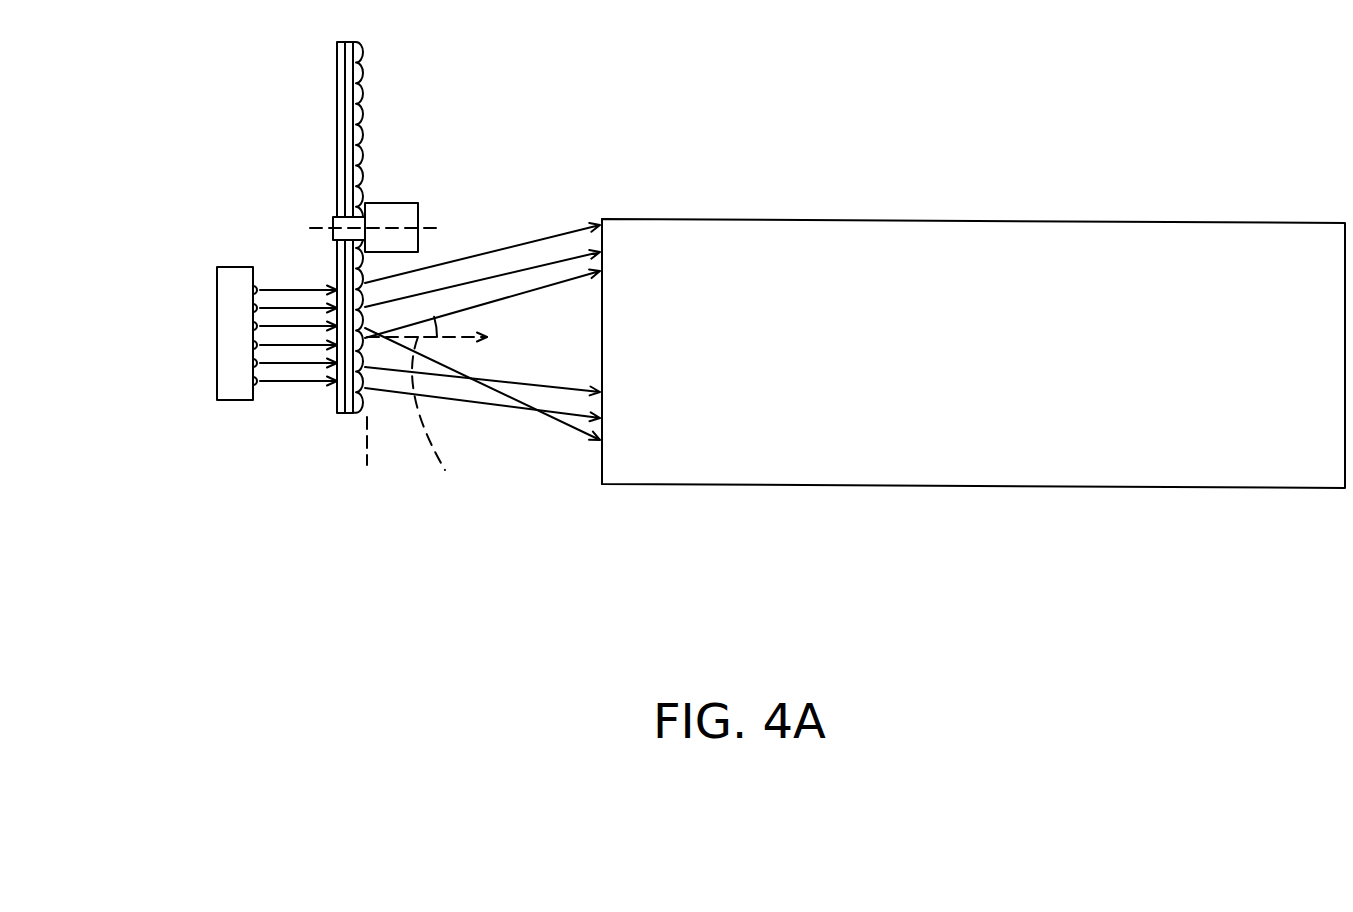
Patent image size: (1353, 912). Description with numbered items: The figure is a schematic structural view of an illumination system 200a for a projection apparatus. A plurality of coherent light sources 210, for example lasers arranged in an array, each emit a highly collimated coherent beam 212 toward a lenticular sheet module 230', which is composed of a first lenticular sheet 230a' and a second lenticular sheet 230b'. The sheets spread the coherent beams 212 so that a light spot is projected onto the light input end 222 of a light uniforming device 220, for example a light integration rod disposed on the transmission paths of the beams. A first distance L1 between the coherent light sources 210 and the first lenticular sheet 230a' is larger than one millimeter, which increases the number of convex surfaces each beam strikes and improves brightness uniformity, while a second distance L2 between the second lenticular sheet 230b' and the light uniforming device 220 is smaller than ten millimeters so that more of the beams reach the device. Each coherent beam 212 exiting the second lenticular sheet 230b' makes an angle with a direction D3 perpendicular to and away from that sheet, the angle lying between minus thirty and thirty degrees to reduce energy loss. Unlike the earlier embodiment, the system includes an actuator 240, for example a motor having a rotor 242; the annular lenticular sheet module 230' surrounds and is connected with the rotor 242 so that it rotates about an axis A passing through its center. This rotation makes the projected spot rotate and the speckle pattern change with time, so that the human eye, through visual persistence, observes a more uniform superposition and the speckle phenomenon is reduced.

The illumination system 200a is at (735, 380).
The coherent light source 210 is at (257, 289).
The coherent beam 212 is at (296, 290).
The light uniforming device 220 is at (1027, 452).
The light input end 222 is at (589, 464).
The lenticular sheet module 230' is at (347, 328).
The first lenticular sheet 230a' is at (318, 303).
The second lenticular sheet 230b' is at (383, 303).
The actuator 240 is at (414, 213).
The rotor 242 is at (358, 227).
The axis A is at (322, 212).
The first distance L1 is at (258, 402).
The second distance L2 is at (592, 448).
The direction D3 is at (441, 427).